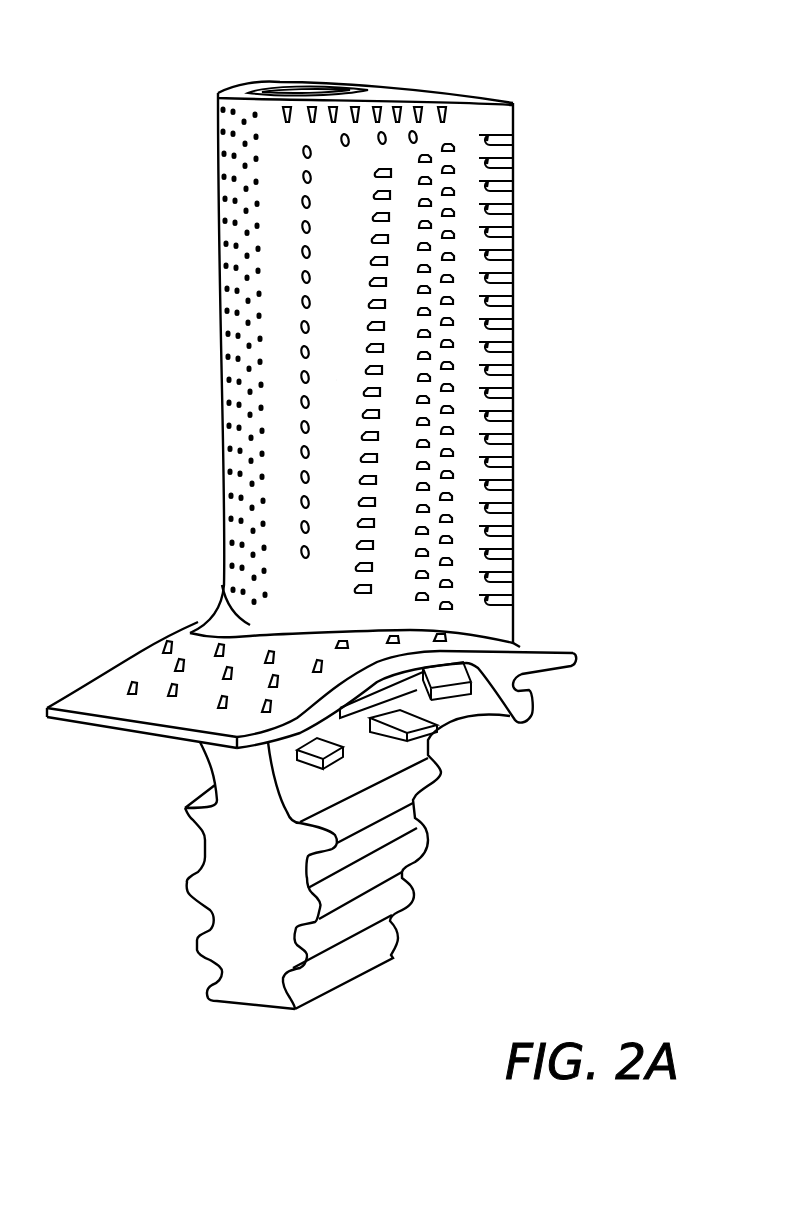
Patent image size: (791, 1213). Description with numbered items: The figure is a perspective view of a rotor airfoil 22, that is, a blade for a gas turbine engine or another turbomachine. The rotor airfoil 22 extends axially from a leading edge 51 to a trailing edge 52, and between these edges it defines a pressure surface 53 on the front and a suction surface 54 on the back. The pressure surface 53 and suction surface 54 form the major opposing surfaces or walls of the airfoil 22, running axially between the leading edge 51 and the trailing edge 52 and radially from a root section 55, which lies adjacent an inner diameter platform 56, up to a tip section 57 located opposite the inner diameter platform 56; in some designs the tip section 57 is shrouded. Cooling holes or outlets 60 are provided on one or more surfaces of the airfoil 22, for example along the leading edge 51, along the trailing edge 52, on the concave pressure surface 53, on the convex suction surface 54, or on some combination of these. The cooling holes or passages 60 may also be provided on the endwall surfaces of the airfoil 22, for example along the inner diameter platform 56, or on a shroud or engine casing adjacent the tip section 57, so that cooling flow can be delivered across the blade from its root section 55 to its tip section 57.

The rotor airfoil 22 is at (102, 98).
The leading edge 51 is at (213, 258).
The trailing edge 52 is at (513, 378).
The pressure surface 53 is at (328, 392).
The suction surface 54 is at (458, 85).
The root section 55 is at (250, 625).
The inner diameter platform 56 is at (122, 655).
The tip section 57 is at (397, 100).
The cooling holes 60 is at (378, 213).